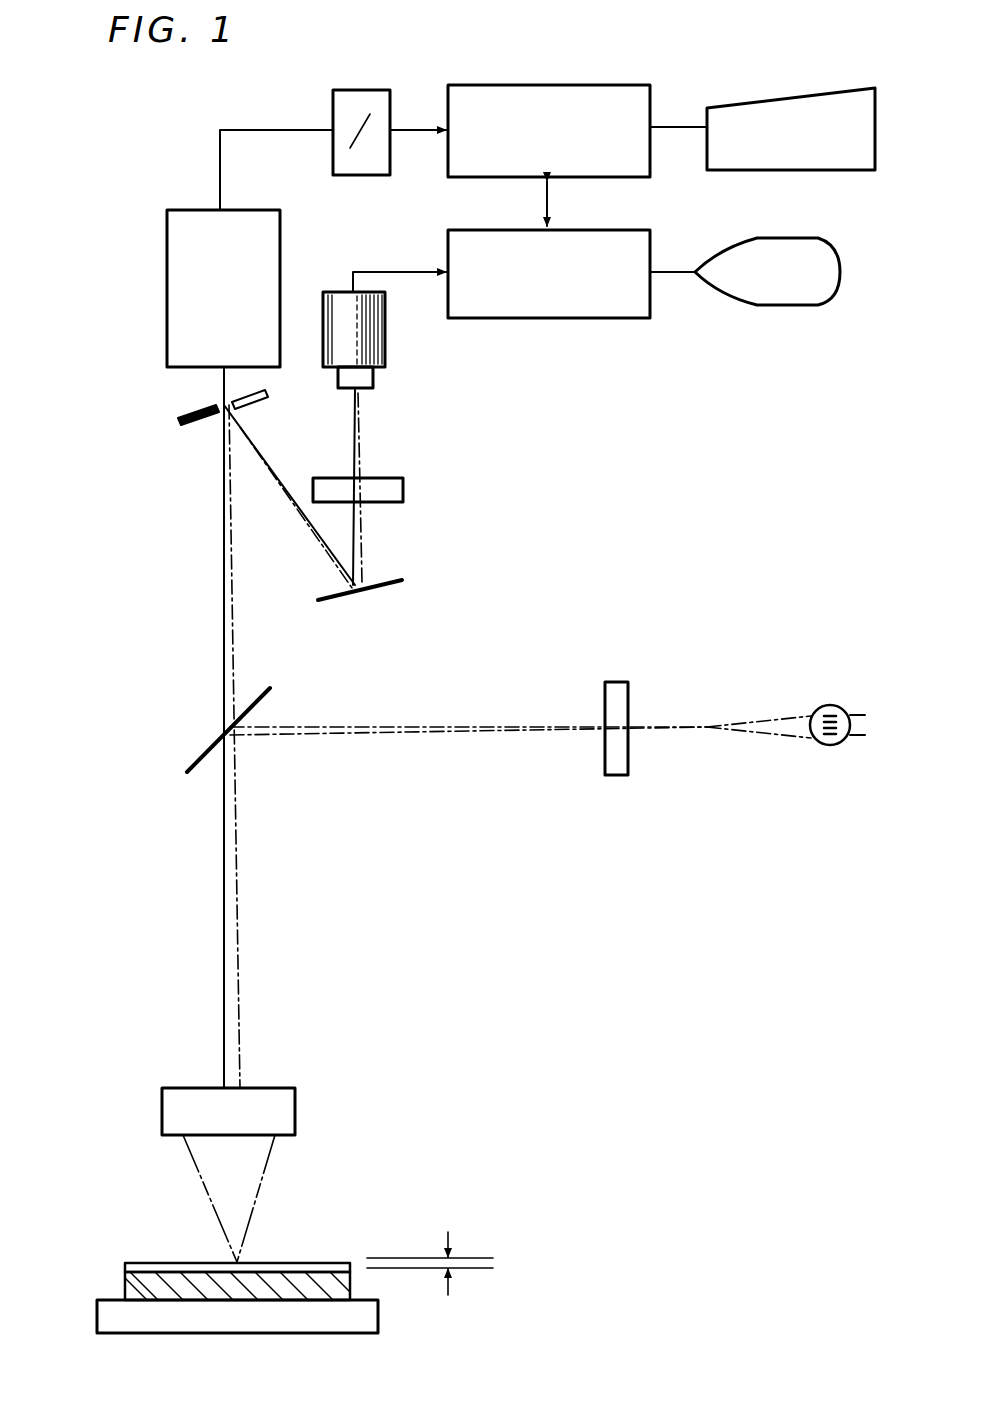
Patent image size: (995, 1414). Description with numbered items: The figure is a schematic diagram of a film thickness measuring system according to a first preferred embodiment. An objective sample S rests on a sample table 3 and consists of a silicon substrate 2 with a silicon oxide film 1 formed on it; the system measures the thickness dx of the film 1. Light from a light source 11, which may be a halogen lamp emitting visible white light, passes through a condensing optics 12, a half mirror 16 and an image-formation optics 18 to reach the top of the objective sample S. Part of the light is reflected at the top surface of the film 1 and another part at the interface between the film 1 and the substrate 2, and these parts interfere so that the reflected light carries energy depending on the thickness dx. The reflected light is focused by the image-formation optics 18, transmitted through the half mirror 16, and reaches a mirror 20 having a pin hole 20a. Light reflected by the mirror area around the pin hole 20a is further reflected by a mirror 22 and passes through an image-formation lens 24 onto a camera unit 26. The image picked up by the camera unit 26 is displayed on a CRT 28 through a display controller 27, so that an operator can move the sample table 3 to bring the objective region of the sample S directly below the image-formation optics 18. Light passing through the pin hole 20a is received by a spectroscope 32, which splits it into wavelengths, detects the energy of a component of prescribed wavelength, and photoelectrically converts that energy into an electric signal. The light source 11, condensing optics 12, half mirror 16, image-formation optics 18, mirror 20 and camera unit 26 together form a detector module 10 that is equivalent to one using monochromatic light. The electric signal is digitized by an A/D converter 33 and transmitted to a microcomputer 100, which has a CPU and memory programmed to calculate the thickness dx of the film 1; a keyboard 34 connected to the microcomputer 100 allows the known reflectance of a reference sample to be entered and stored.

The detector module 10 is at (126, 665).
The light source 11 is at (825, 745).
The condensing optics 12 is at (616, 778).
The half mirror 16 is at (196, 758).
The image-formation optics 18 is at (296, 1118).
The mirror 20 is at (185, 420).
The pin hole 20a is at (208, 400).
The mirror 22 is at (324, 606).
The image-formation lens 24 is at (380, 477).
The camera unit 26 is at (385, 356).
The display controller 27 is at (608, 230).
The CRT 28 is at (772, 237).
The spectroscope 32 is at (232, 210).
The A/D converter 33 is at (362, 88).
The keyboard 34 is at (815, 88).
The microcomputer 100 is at (590, 85).
The objective sample S is at (165, 1258).
The silicon oxide film 1 is at (335, 1262).
The silicon substrate 2 is at (352, 1286).
The sample table 3 is at (360, 1318).
The thickness dx is at (431, 1260).